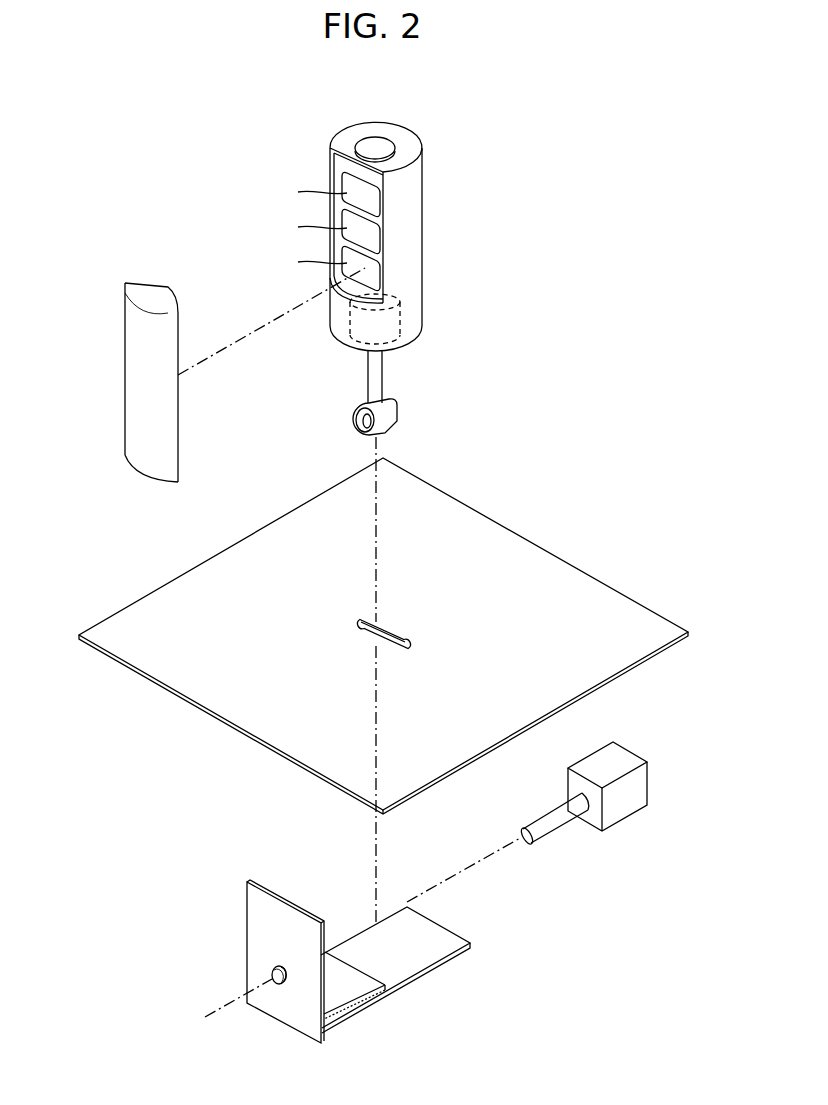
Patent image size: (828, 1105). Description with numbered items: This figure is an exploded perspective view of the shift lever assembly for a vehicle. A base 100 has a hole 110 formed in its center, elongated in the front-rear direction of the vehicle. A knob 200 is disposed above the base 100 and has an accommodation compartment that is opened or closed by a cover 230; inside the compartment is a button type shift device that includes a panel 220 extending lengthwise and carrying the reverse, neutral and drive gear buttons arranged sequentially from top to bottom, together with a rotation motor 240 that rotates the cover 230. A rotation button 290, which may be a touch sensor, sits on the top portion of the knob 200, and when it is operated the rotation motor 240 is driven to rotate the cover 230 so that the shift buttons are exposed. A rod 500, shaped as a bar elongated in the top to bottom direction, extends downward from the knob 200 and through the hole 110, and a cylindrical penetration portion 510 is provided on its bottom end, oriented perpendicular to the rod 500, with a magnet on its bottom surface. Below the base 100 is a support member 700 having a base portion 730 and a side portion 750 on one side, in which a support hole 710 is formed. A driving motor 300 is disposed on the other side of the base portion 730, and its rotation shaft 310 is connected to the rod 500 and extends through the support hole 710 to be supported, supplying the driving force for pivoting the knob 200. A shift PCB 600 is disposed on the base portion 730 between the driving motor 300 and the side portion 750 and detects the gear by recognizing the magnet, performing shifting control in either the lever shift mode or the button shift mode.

The base 100 is at (478, 523).
The hole 110 is at (398, 634).
The knob 200 is at (428, 233).
The panel 220 is at (340, 165).
The cover 230 is at (140, 392).
The rotation motor 240 is at (392, 322).
The rotation button 290 is at (375, 147).
The driving motor 300 is at (628, 760).
The rotation shaft 310 is at (560, 820).
The rod 500 is at (382, 377).
The cylindrical penetration portion 510 is at (397, 413).
The shift PCB 600 is at (357, 992).
The support member 700 is at (243, 954).
The support hole 710 is at (277, 988).
The base portion 730 is at (443, 970).
The side portion 750 is at (258, 973).